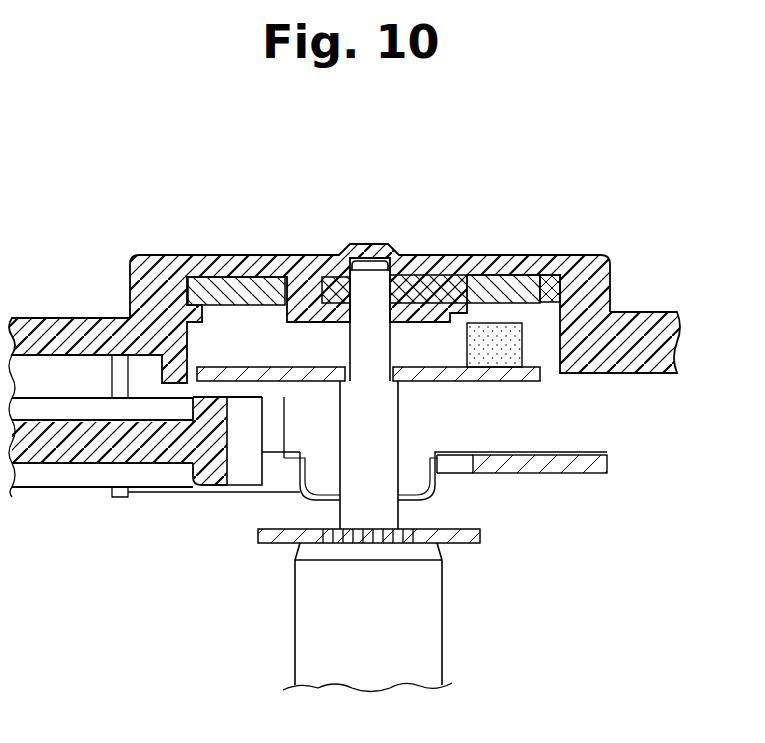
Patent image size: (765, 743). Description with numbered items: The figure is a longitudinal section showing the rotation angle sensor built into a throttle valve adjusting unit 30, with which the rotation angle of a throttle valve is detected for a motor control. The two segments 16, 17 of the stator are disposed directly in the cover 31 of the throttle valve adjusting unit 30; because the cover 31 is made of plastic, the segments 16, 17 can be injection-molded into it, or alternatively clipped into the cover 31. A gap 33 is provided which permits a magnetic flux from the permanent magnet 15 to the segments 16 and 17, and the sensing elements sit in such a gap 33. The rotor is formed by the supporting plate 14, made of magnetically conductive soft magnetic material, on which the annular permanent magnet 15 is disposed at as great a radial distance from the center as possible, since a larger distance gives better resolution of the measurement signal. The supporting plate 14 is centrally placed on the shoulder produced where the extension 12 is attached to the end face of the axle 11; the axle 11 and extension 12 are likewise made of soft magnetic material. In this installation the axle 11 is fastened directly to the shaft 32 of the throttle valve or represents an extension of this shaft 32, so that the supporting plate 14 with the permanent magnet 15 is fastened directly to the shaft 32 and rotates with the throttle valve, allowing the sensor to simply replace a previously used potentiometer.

The throttle valve adjusting unit 30 is at (412, 203).
The segment of the stator 16 is at (500, 266).
The segment of the stator 17 is at (262, 288).
The gap 33 is at (228, 335).
The cover 31 is at (610, 293).
The extension 12 is at (372, 346).
The supporting plate 14 is at (442, 382).
The permanent magnet 15 is at (497, 353).
The axle 11 is at (380, 518).
The shaft 32 is at (412, 624).